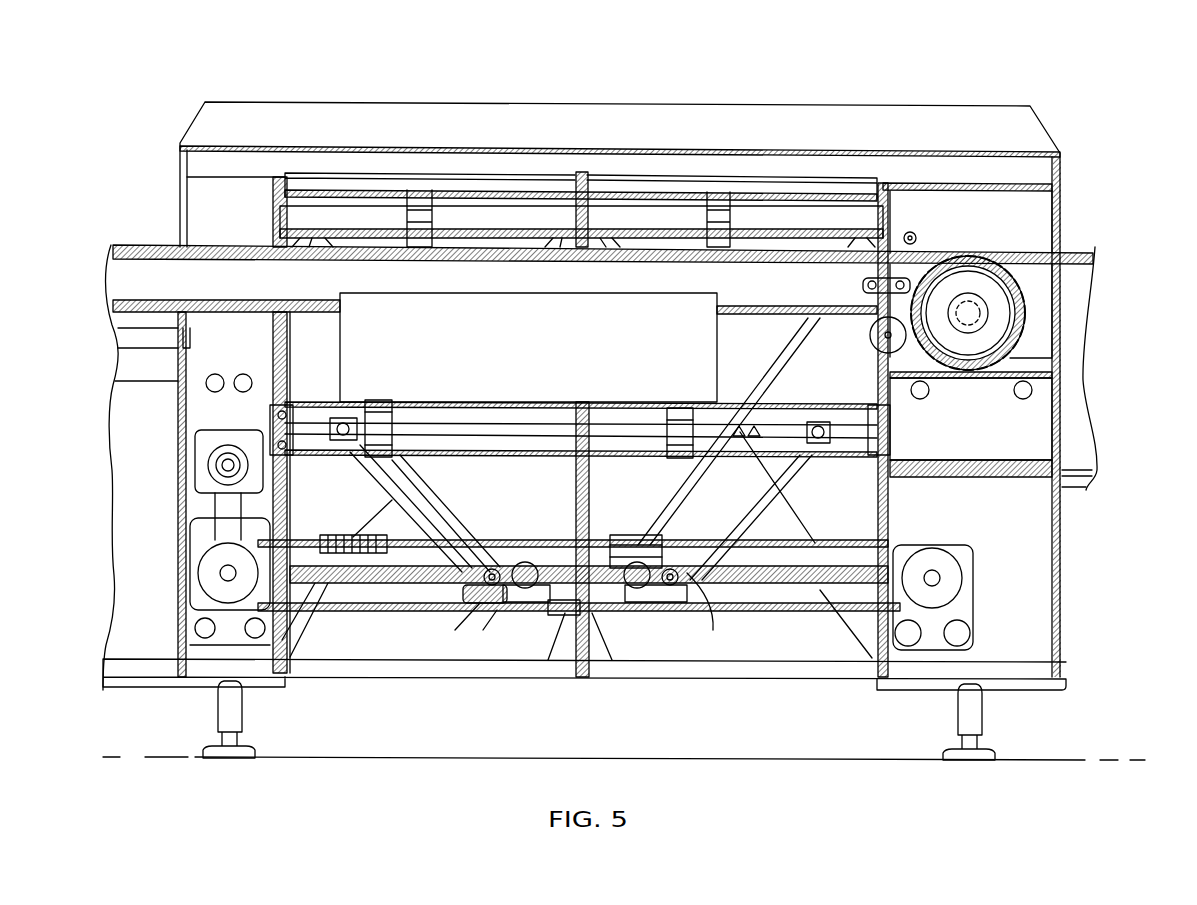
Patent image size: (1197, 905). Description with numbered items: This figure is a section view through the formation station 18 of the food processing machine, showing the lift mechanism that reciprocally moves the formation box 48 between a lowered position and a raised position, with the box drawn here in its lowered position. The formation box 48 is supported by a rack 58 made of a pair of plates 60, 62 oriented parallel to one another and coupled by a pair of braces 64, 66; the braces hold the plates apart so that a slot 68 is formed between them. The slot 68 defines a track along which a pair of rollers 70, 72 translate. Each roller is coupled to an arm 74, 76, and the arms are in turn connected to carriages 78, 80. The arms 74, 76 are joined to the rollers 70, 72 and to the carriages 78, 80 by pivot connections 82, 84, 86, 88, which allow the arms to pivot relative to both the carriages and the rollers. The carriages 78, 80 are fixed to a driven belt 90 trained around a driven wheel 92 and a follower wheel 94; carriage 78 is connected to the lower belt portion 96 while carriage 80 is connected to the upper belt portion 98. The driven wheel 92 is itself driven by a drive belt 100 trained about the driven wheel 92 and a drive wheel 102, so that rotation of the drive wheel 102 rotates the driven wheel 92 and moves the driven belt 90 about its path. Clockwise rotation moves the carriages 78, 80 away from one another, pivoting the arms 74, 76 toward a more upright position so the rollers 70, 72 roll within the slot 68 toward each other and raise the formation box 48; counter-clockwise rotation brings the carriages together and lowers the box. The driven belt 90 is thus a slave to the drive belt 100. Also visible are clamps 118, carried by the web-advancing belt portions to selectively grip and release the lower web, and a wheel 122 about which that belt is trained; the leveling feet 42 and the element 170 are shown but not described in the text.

The formation station 18 is at (634, 58).
The leveling foot 42 is at (225, 718).
The formation box 48 is at (526, 345).
The rack 58 is at (350, 468).
The plate 60 is at (313, 415).
The plate 62 is at (633, 450).
The brace 64 is at (392, 430).
The brace 66 is at (730, 390).
The slot 68 is at (543, 435).
The roller 70 is at (333, 452).
The roller 72 is at (818, 445).
The arm 74 is at (366, 526).
The arm 76 is at (780, 495).
The carriage 78 is at (495, 622).
The carriage 80 is at (677, 633).
The pivot connection 82 is at (490, 592).
The pivot connection 84 is at (683, 585).
The pivot connection 86 is at (355, 418).
The pivot connection 88 is at (823, 392).
The driven belt 90 is at (366, 620).
The driven wheel 92 is at (213, 572).
The follower wheel 94 is at (963, 583).
The lower belt portion 96 is at (560, 608).
The upper belt portion 98 is at (600, 540).
The drive belt 100 is at (188, 537).
The drive wheel 102 is at (200, 470).
The clamp 118 is at (996, 238).
The wheel 122 is at (1005, 316).
The mounting plate 170 is at (867, 307).